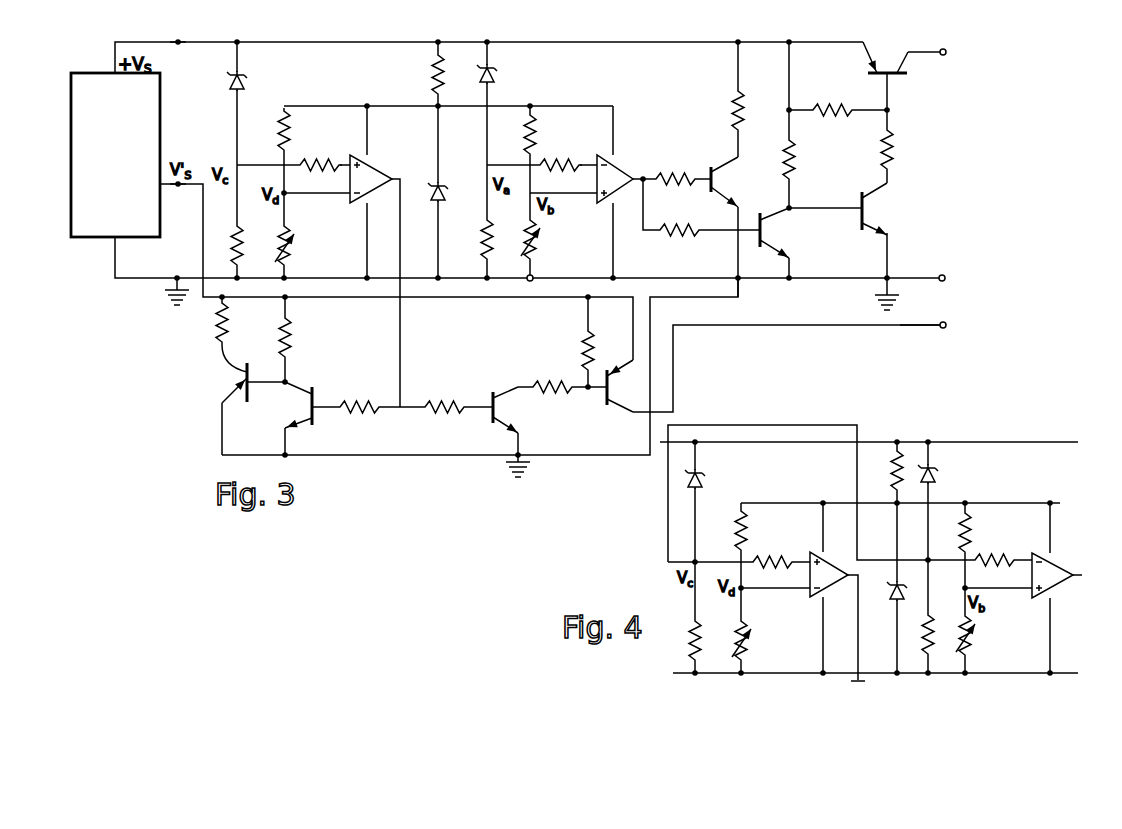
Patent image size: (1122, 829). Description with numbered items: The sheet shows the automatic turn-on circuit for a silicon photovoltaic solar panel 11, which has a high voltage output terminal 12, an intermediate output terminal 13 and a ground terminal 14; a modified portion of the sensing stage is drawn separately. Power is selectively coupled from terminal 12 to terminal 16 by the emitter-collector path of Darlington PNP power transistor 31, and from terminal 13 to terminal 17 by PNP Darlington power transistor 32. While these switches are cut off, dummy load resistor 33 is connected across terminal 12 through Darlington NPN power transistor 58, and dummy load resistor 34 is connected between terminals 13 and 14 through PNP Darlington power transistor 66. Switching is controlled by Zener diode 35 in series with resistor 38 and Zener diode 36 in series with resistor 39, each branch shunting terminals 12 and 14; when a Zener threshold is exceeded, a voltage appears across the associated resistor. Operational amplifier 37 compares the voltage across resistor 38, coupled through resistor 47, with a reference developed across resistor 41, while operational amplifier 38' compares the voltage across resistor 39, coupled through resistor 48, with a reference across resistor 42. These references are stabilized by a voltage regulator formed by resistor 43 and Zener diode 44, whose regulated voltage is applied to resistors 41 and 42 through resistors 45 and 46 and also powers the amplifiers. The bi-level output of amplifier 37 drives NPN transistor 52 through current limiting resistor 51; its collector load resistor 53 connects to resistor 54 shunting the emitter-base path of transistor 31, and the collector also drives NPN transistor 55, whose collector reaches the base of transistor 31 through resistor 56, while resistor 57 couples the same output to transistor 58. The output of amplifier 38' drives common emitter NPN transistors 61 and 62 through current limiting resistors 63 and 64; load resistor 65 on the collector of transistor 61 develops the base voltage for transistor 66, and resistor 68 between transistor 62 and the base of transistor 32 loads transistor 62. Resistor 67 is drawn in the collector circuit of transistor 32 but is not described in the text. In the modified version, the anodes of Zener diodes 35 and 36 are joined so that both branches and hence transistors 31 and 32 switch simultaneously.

In FIG. 3, the silicon photovoltaic solar panel 11 is at (94, 68).
In FIG. 3, the high voltage output terminal 12 is at (178, 41).
In FIG. 3, the intermediate output terminal 13 is at (178, 187).
In FIG. 3, the ground terminal 14 is at (177, 278).
In FIG. 3, the terminal 16 is at (946, 51).
In FIG. 3, the terminal 17 is at (941, 327).
In FIG. 3, the Darlington PNP power transistor 31 is at (904, 76).
In FIG. 3, the PNP Darlington power transistor 32 is at (604, 400).
In FIG. 3, the resistor 33 is at (734, 106).
In FIG. 3, the resistor 34 is at (216, 323).
In FIG. 3, the Zener diode 35 is at (490, 72).
In FIG. 4, the Zener diode 35 is at (937, 474).
In FIG. 3, the Zener diode 36 is at (244, 78).
In FIG. 4, the Zener diode 36 is at (700, 477).
In FIG. 3, the operational amplifier 37 is at (596, 204).
In FIG. 4, the operational amplifier 37 is at (1060, 562).
In FIG. 3, the resistor 38 is at (470, 239).
In FIG. 3, the operational amplifier 38' is at (372, 168).
In FIG. 3, the resistor 39 is at (238, 240).
In FIG. 4, the resistor 39 is at (697, 634).
In FIG. 3, the resistor 41 is at (527, 233).
In FIG. 4, the resistor 41 is at (957, 628).
In FIG. 3, the resistor 42 is at (290, 240).
In FIG. 4, the resistor 42 is at (745, 627).
In FIG. 3, the resistor 43 is at (441, 70).
In FIG. 4, the resistor 43 is at (903, 456).
In FIG. 3, the Zener diode 44 is at (448, 195).
In FIG. 4, the Zener diode 44 is at (902, 585).
In FIG. 3, the resistor 45 is at (535, 132).
In FIG. 4, the resistor 45 is at (974, 525).
In FIG. 3, the resistor 46 is at (290, 138).
In FIG. 4, the resistor 46 is at (745, 528).
In FIG. 3, the resistor 47 is at (580, 162).
In FIG. 4, the resistor 47 is at (1013, 560).
In FIG. 3, the resistor 48 is at (334, 178).
In FIG. 4, the resistor 48 is at (782, 572).
In FIG. 3, the current limiting resistor 51 is at (668, 234).
In FIG. 3, the NPN transistor 52 is at (770, 234).
In FIG. 3, the load resistor 53 is at (793, 150).
In FIG. 3, the resistor 54 is at (841, 114).
In FIG. 3, the NPN transistor 55 is at (862, 212).
In FIG. 3, the resistor 56 is at (892, 142).
In FIG. 3, the resistor 57 is at (684, 176).
In FIG. 3, the Darlington NPN power transistor 58 is at (722, 184).
In FIG. 3, the NPN transistor 61 is at (316, 390).
In FIG. 3, the NPN transistor 62 is at (491, 420).
In FIG. 3, the current limiting resistor 63 is at (371, 404).
In FIG. 3, the current limiting resistor 64 is at (455, 404).
In FIG. 3, the load resistor 65 is at (290, 333).
In FIG. 3, the PNP Darlington power transistor 66 is at (252, 368).
In FIG. 3, the resistor R11 67 is at (580, 340).
In FIG. 3, the resistor 68 is at (550, 384).